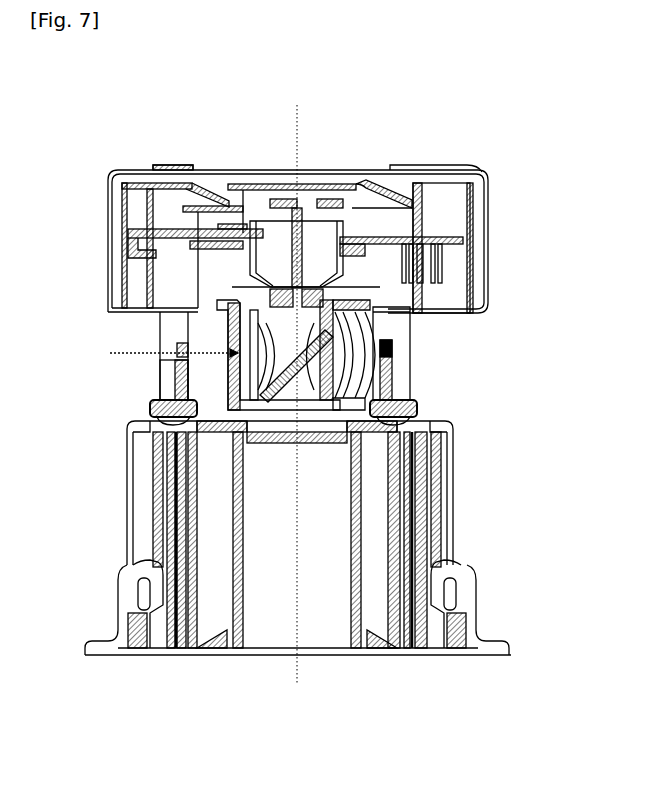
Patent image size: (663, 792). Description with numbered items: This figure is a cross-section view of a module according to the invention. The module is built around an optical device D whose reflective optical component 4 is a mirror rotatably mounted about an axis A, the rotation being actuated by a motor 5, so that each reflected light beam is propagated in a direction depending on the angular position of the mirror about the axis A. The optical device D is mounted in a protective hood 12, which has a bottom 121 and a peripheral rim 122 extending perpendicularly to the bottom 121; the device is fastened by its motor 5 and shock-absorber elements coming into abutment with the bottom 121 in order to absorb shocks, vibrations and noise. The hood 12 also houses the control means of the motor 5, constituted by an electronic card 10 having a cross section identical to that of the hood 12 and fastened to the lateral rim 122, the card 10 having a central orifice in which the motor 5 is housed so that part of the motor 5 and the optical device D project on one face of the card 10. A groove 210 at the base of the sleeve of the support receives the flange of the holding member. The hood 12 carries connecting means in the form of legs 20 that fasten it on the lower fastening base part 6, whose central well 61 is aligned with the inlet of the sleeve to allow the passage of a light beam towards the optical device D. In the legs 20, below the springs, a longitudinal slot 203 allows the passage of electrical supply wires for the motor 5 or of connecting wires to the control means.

The axis A is at (307, 386).
The optical device D is at (159, 353).
The reflective optical component 4 is at (365, 357).
The motor 5 is at (368, 185).
The fastening base part 6 is at (467, 610).
The electronic card 10 is at (128, 233).
The protective hood 12 is at (473, 220).
The legs 20 is at (397, 390).
The central well 61 is at (318, 530).
The bottom 121 is at (142, 177).
The peripheral rim 122 is at (473, 281).
The longitudinal slot 203 is at (175, 392).
The groove 210 is at (390, 270).